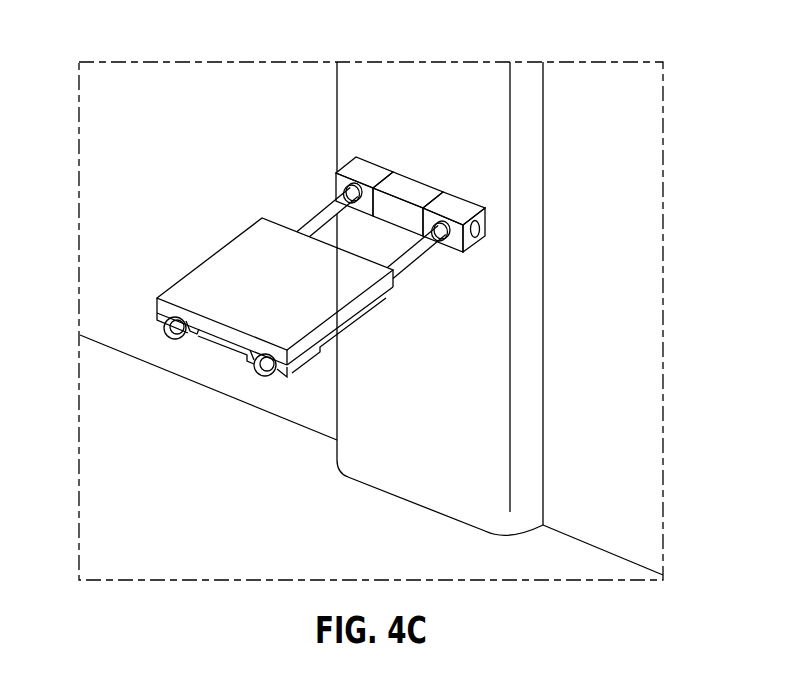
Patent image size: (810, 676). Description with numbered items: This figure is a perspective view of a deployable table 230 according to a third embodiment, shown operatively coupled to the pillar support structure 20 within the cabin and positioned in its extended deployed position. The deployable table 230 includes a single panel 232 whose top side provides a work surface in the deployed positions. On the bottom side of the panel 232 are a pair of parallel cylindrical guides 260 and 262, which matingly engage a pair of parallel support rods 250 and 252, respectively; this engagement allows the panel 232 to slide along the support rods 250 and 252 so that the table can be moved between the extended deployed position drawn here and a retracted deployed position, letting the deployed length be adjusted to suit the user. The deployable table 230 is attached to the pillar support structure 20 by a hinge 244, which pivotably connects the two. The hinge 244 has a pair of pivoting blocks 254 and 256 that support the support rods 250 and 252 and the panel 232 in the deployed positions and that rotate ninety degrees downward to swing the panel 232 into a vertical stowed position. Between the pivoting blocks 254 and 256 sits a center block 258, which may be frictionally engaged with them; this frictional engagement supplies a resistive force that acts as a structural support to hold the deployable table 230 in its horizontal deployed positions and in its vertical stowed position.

The pillar support structure 20 is at (530, 137).
The deployable table 230 is at (181, 261).
The panel 232 is at (245, 243).
The hinge 244 is at (480, 228).
The support rod 250 is at (327, 209).
The support rod 252 is at (410, 258).
The pivoting block 254 is at (368, 181).
The pivoting block 256 is at (455, 210).
The center block 258 is at (412, 188).
The cylindrical guide 260 is at (173, 328).
The cylindrical guide 262 is at (262, 370).